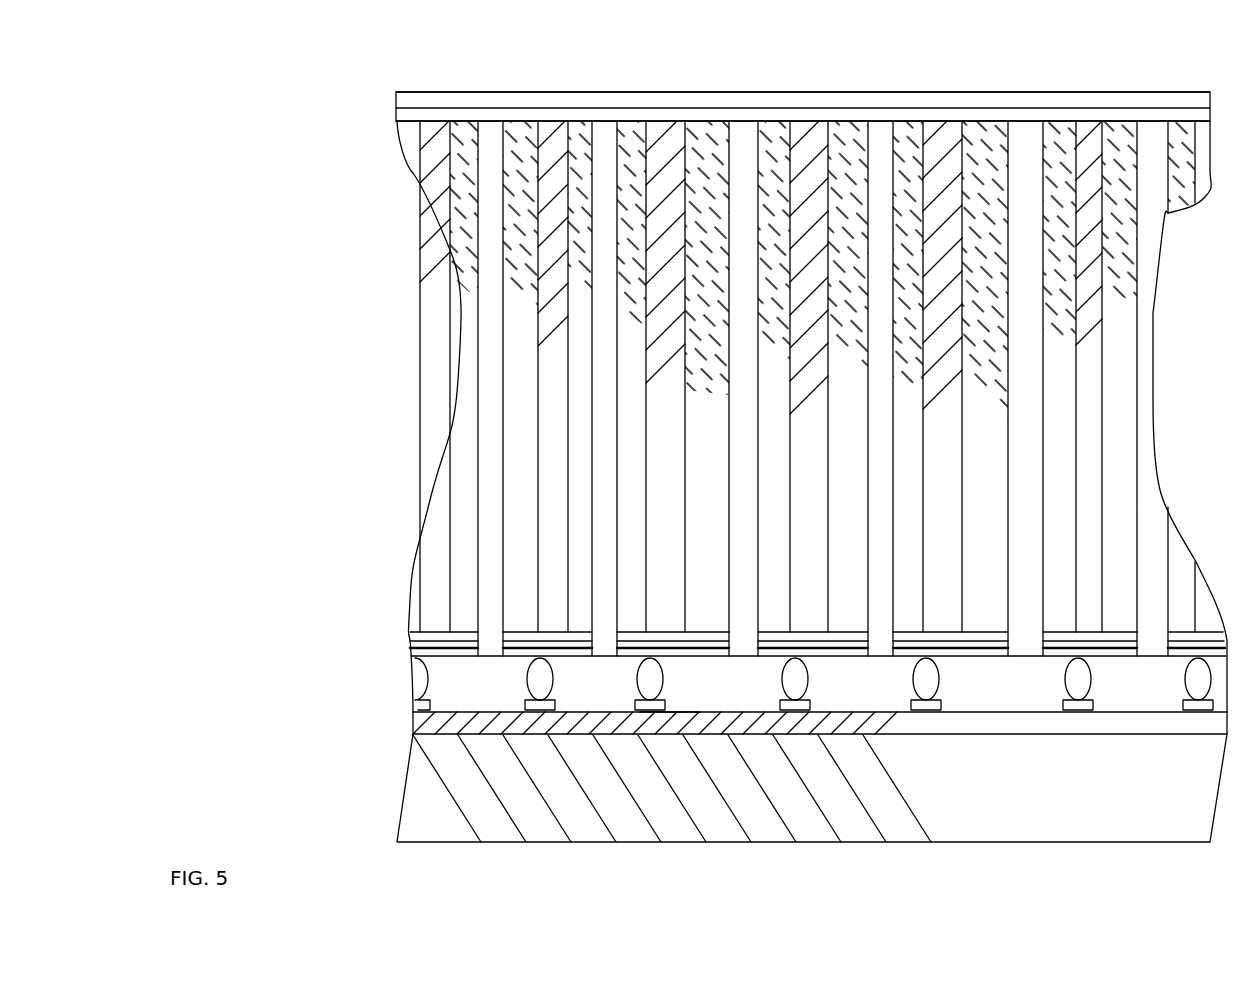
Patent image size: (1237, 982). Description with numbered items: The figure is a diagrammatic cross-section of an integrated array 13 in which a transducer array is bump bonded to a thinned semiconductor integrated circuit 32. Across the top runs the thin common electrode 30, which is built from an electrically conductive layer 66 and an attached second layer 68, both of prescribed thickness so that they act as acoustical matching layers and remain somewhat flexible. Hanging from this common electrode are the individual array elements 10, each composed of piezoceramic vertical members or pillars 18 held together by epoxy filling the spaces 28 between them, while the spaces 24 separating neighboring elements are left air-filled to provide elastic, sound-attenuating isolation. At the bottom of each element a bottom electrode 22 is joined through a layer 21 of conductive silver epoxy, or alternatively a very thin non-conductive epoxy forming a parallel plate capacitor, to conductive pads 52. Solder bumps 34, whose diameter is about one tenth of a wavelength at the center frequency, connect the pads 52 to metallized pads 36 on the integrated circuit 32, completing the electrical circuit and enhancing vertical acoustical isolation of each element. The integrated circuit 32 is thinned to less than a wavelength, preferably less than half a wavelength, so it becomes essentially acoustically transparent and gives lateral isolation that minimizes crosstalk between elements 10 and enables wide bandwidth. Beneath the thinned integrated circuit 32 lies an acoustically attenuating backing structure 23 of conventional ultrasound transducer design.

The array elements 10 is at (590, 88).
The integrated array 13 is at (412, 364).
The piezoceramic vertical members or pillars 18 is at (577, 222).
The layer 21 is at (407, 653).
The bottom electrode 22 is at (408, 638).
The acoustically attenuating backing structure 23 is at (403, 805).
The spaces 24 is at (598, 137).
The spaces 28 is at (548, 285).
The common electrode 30 is at (357, 93).
The integrated circuit 32 is at (412, 720).
The solder bumps 34 is at (412, 678).
The metallized pads 36 is at (668, 707).
The pads 52 is at (408, 665).
The electrically conductive layer 66 is at (396, 118).
The second layer 68 is at (396, 97).